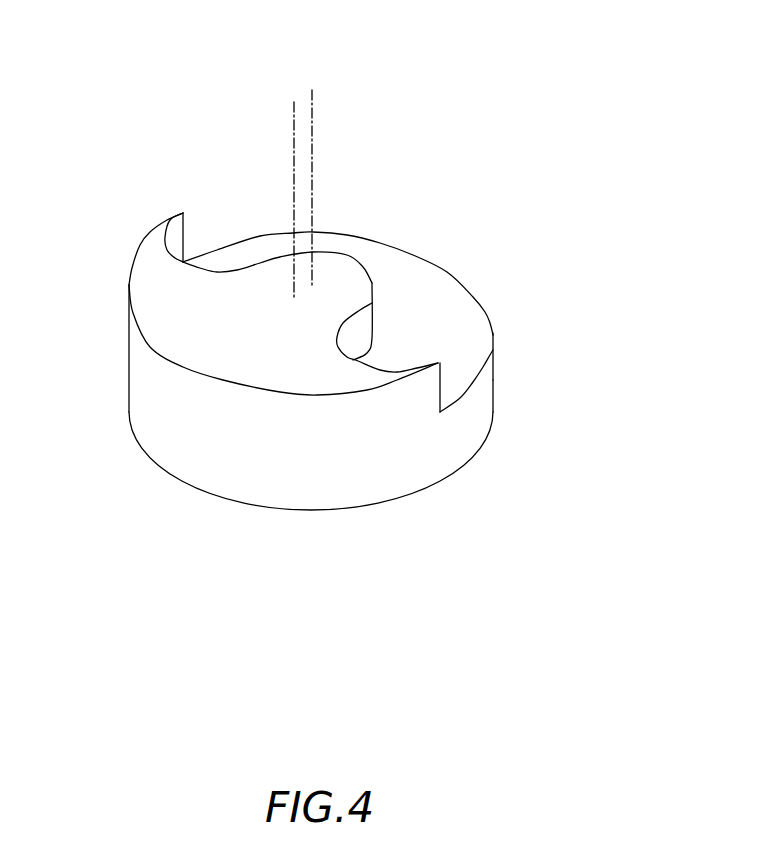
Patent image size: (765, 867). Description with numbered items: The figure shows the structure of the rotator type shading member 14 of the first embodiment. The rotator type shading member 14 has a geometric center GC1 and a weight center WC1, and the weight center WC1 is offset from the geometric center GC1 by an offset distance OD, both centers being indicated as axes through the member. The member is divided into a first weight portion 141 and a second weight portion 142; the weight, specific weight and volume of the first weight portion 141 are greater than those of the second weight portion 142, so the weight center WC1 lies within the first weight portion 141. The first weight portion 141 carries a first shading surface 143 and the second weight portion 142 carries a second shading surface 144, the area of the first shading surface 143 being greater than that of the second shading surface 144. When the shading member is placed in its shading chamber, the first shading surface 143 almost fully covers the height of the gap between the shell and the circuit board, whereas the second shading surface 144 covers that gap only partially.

The rotator type shading member 14 is at (323, 288).
The first weight portion 141 is at (150, 282).
The second weight portion 142 is at (442, 293).
The first shading surface 143 is at (200, 457).
The second shading surface 144 is at (497, 367).
The weight center WC1 is at (294, 220).
The geometric center GC1 is at (312, 212).
The offset distance OD is at (357, 72).